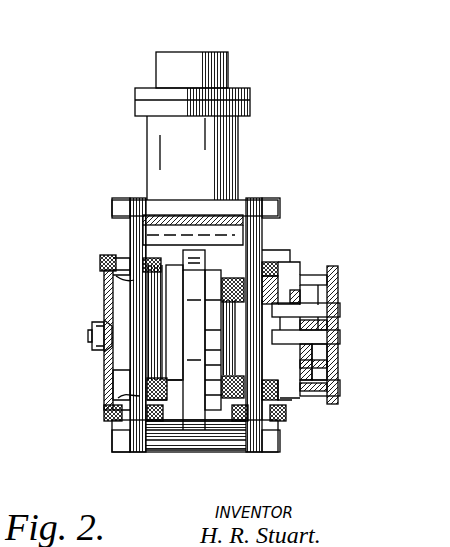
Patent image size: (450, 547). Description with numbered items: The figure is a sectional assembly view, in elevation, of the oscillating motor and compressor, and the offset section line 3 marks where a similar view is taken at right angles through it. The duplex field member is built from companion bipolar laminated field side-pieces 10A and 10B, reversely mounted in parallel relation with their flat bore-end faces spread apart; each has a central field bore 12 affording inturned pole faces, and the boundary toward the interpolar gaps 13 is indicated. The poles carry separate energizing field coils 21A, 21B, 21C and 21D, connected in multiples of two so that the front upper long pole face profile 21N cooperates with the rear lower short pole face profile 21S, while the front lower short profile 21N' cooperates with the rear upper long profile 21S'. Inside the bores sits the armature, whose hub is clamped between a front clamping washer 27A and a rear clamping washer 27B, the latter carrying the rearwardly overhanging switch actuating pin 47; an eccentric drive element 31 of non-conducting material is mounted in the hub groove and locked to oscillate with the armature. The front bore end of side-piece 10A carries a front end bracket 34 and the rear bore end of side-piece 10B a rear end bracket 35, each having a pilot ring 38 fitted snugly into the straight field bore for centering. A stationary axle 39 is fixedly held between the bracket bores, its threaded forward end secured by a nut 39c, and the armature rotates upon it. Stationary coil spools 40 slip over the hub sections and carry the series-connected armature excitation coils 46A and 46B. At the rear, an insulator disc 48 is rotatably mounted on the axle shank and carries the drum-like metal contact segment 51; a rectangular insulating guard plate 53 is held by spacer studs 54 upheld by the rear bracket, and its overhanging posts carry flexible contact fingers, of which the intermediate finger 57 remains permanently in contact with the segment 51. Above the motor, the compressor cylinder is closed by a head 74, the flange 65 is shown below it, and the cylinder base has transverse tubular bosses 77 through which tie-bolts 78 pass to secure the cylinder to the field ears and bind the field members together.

The section line 3— 3 is at (189, 19).
The central field bore 12 is at (125, 478).
The section line 13- 13 is at (258, 170).
The head 74 is at (222, 70).
The flange 65 is at (232, 134).
The tubular boss 77 is at (228, 206).
The tie-bolt 78 is at (120, 204).
The field side-piece 10A is at (125, 464).
The field side-piece 10B is at (256, 445).
The field coil 21A is at (104, 256).
The field coil 21B is at (266, 400).
The field coil 21C is at (285, 274).
The field coil 21D is at (106, 418).
The front upper long pole face profile 21N is at (82, 280).
The front lower short pole face profile 21N' is at (71, 412).
The rear lower short pole face profile 21S is at (227, 392).
The rear upper long pole face profile 21S' is at (292, 249).
The front clamping washer 27A is at (120, 384).
The rear clamping washer 27B is at (288, 390).
The eccentric drive element 31 is at (184, 278).
The front end bracket 34 is at (104, 302).
The rear end bracket 35 is at (268, 258).
The pilot ring 38 is at (106, 256).
The stationary axle 39 is at (90, 344).
The nut 39c is at (92, 330).
The coil spool 40 is at (218, 395).
The stationary armature excitation coil 46A is at (147, 390).
The stationary armature excitation coil 46B is at (248, 262).
The switch actuating pin 47 is at (338, 312).
The insulator disc 48 is at (338, 360).
The drum-like metal contact segment 51 is at (330, 305).
The guard plate 53 is at (338, 344).
The spacer stud 54 is at (332, 394).
The contact finger 57 is at (312, 280).